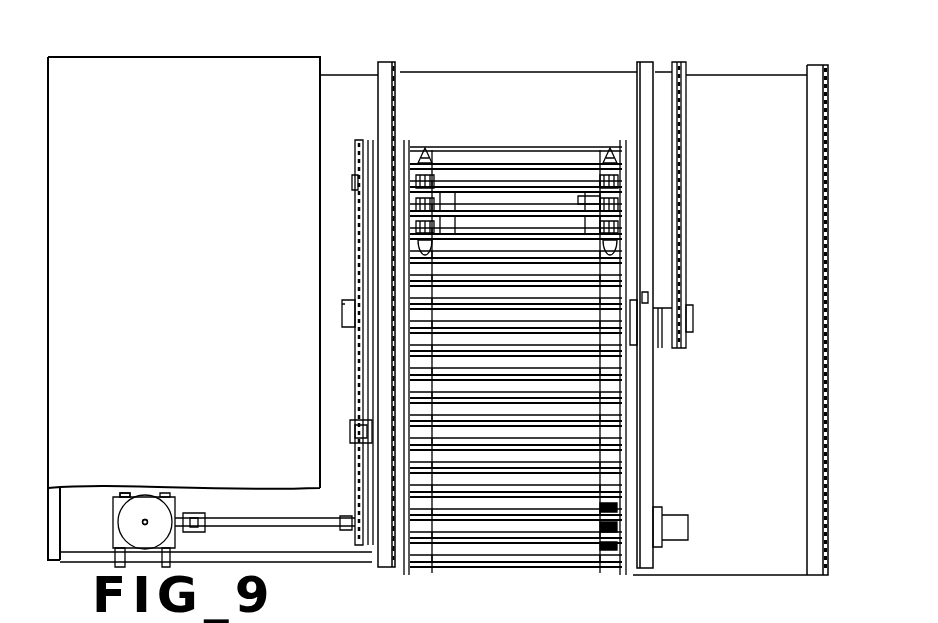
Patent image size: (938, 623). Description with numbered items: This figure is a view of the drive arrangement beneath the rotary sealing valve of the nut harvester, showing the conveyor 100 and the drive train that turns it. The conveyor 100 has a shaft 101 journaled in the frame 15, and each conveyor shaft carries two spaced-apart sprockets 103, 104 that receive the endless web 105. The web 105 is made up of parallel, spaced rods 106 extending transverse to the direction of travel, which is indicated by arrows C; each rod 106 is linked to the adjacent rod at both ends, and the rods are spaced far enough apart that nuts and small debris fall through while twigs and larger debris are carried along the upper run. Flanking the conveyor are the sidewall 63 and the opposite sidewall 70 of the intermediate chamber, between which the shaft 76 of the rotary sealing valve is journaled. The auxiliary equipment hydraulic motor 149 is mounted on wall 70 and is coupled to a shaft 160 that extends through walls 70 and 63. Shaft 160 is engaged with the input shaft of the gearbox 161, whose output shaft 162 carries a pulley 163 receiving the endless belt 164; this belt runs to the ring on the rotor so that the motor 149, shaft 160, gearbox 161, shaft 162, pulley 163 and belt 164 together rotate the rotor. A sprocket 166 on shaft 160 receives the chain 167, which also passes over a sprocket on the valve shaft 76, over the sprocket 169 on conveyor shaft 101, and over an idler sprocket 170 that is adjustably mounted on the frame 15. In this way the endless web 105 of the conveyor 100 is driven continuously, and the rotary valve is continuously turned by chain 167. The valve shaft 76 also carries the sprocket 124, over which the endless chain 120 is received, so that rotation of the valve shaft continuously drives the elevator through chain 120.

The frame 15 is at (44, 548).
The sidewall 63 is at (388, 370).
The sidewall 70 is at (650, 458).
The shaft 76 is at (658, 325).
The conveyor 100 is at (471, 132).
The shaft 101 is at (580, 200).
The sprockets 103 is at (445, 125).
The sprockets 104 is at (612, 150).
The endless web 105 is at (545, 150).
The rods 106 is at (605, 243).
The endless chain 120 is at (680, 300).
The sprocket 124 is at (690, 328).
The auxiliary equipment hydraulic motor 149 is at (672, 517).
The shaft 160 is at (284, 518).
The gearbox 161 is at (122, 495).
The output shaft 162 is at (146, 521).
The pulley 163 is at (122, 525).
The endless belt 164 is at (196, 530).
The sprocket 166 is at (355, 540).
The chain 167 is at (357, 240).
The sprocket 169 is at (358, 180).
The idler sprocket 170 is at (352, 430).
The arrows C is at (494, 130).